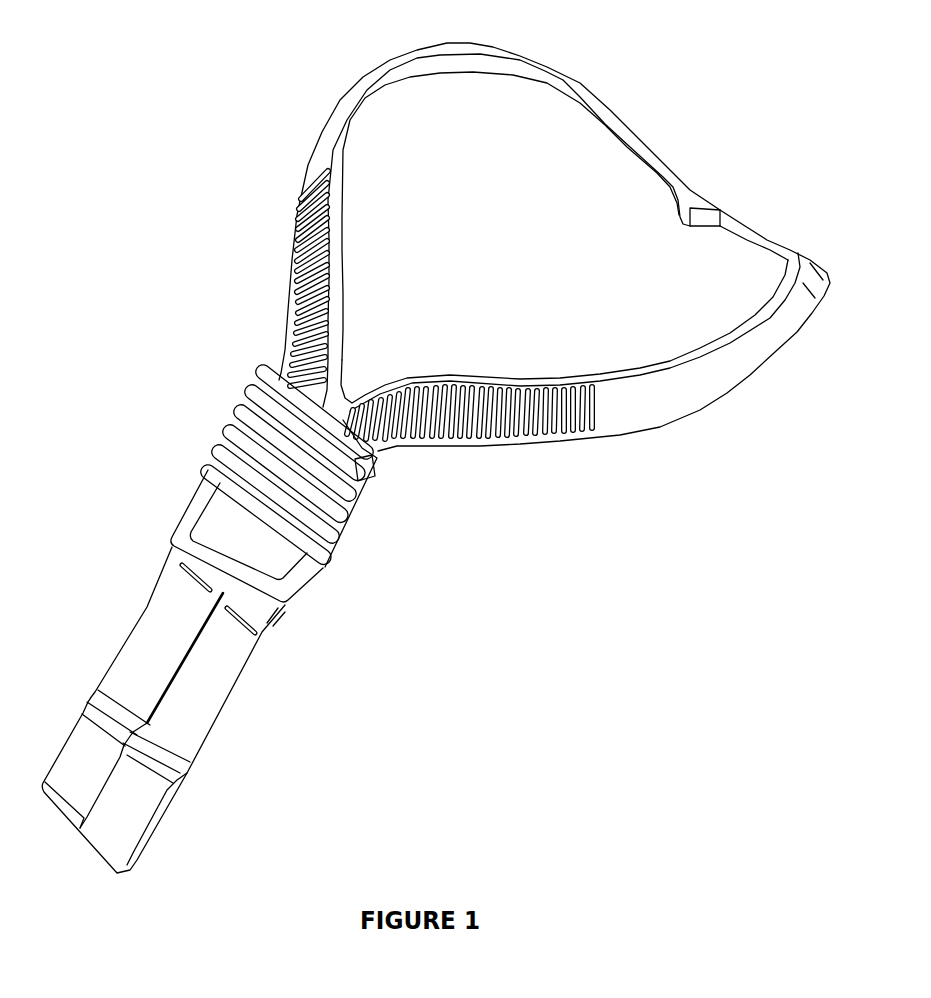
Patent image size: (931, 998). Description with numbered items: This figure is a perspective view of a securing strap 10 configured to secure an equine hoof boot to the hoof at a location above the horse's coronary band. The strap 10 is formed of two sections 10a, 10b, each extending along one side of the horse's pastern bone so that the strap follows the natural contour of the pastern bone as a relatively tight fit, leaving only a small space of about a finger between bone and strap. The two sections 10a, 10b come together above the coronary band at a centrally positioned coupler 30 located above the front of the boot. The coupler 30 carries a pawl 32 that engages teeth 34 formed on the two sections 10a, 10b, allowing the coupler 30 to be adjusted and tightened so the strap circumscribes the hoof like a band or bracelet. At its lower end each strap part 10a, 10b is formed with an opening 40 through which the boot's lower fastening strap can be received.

The securing strap 10 is at (252, 64).
The first section 10a is at (710, 378).
The second section 10b is at (322, 152).
The coupler 30 is at (352, 458).
The pawl 32 is at (227, 528).
The teeth 34 is at (293, 292).
The opening 40 is at (163, 816).